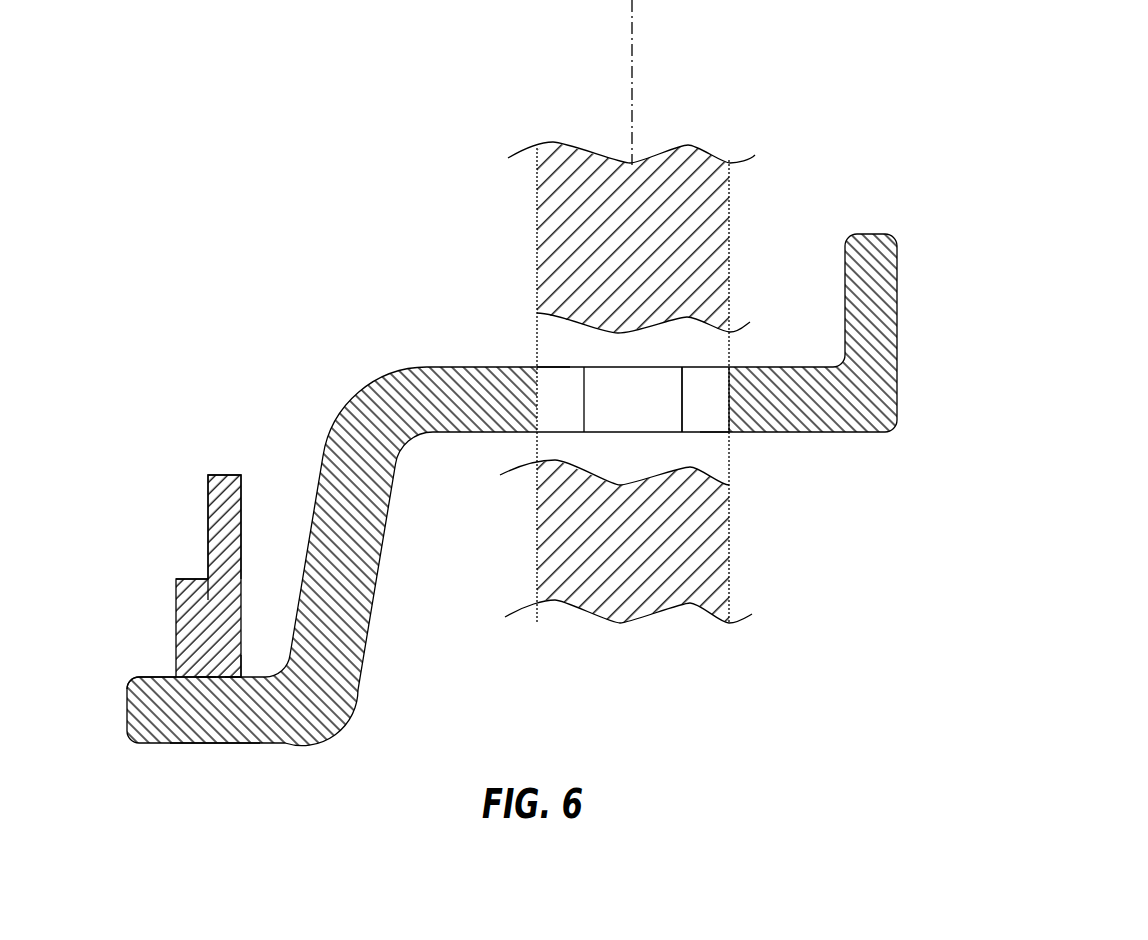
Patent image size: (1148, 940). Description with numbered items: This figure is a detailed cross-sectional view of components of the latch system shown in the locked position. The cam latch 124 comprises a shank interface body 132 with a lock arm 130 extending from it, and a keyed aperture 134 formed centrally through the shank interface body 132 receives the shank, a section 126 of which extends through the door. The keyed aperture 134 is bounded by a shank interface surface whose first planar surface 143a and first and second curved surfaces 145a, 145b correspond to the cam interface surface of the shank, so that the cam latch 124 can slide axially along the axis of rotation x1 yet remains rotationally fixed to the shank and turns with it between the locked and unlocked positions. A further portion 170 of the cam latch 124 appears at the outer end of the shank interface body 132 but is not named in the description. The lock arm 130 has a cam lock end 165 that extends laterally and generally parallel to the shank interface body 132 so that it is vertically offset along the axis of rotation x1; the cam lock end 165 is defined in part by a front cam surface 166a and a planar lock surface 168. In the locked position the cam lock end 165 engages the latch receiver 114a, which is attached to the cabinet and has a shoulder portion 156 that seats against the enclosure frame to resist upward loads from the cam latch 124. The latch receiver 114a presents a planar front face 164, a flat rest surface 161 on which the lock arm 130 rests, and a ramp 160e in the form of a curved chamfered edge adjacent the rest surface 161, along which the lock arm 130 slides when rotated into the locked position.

The axis of rotation x1 is at (632, 20).
The cam latch 124 is at (496, 457).
The shank section 126 is at (537, 200).
The lock arm 130 is at (375, 565).
The shank interface body 132 is at (455, 367).
The keyed aperture 134 is at (710, 372).
The first planar surface 143a is at (613, 420).
The first curved surface 145a is at (710, 407).
The second curved surface 145b is at (557, 403).
The lip 170 is at (877, 270).
The latch receiver 114a is at (175, 540).
The shoulder portion 156 is at (198, 564).
The front face 164 is at (252, 489).
The ramp 160e is at (253, 658).
The planar lock surface 168 is at (150, 667).
The front cam surface 166a is at (118, 674).
The rest surface 161 is at (201, 688).
The cam lock end 165 is at (208, 768).